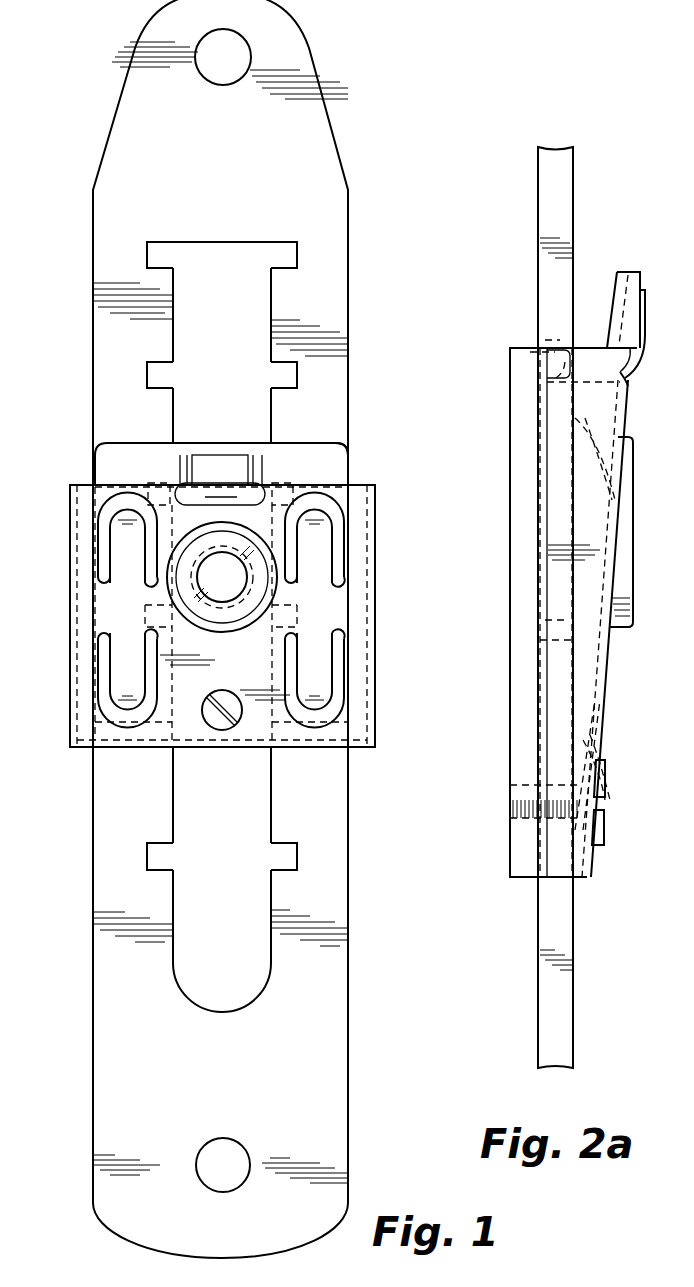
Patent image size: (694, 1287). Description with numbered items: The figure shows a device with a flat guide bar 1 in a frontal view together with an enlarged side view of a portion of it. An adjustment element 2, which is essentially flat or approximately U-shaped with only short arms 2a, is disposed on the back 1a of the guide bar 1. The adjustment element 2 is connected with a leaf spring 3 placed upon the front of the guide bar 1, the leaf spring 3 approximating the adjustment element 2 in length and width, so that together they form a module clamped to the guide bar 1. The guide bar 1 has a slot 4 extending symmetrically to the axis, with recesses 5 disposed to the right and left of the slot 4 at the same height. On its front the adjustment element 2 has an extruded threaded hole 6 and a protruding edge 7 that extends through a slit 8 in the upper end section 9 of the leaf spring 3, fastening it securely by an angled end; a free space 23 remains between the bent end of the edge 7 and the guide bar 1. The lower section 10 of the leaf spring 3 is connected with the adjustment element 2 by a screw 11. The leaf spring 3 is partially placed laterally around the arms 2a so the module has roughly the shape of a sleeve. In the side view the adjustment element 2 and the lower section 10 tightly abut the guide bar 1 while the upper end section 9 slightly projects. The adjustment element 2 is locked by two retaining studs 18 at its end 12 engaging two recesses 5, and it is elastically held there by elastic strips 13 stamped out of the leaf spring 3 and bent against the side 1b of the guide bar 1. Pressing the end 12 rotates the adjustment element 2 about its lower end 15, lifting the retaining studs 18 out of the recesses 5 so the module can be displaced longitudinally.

In FIG. 1, the flat guide bar 1 is at (334, 99).
In FIG. 2A, the flat guide bar 1 is at (537, 210).
In FIG. 2A, the back of the guide bar 1a is at (537, 1022).
In FIG. 1, the side of the guide bar 1b is at (350, 826).
In FIG. 2A, the side of the guide bar 1b is at (574, 1028).
In FIG. 1, the adjustment element 2 is at (322, 480).
In FIG. 2A, the adjustment element 2 is at (509, 447).
In FIG. 1, the arms 2a is at (83, 742).
In FIG. 2A, the arms 2a is at (540, 518).
In FIG. 1, the leaf spring 3 is at (377, 618).
In FIG. 2A, the leaf spring 3 is at (617, 612).
In FIG. 1, the slot 4 is at (225, 262).
In FIG. 1, the recesses 5 is at (157, 250).
In FIG. 2A, the recesses 5 is at (548, 345).
In FIG. 1, the extruded threaded hole 6 is at (233, 612).
In FIG. 2A, the extruded threaded hole 6 is at (630, 553).
In FIG. 1, the protruding edge 7 is at (221, 458).
In FIG. 2A, the protruding edge 7 is at (646, 302).
In FIG. 1, the slit 8 is at (262, 483).
In FIG. 1, the upper end section 9 is at (330, 450).
In FIG. 2A, the upper end section 9 is at (626, 381).
In FIG. 1, the lower section 10 is at (253, 735).
In FIG. 2A, the lower section 10 is at (586, 866).
In FIG. 1, the screw 11 is at (215, 722).
In FIG. 2A, the screw 11 is at (603, 830).
In FIG. 2A, the end of the adjustment element 12 is at (520, 360).
In FIG. 1, the elastic strips 13 is at (130, 560).
In FIG. 2A, the elastic strips 13 is at (596, 418).
In FIG. 2A, the lower end 15 is at (522, 866).
In FIG. 1, the retaining studs 18 is at (152, 485).
In FIG. 2A, the retaining studs 18 is at (546, 382).
In FIG. 2A, the free space 23 is at (598, 282).